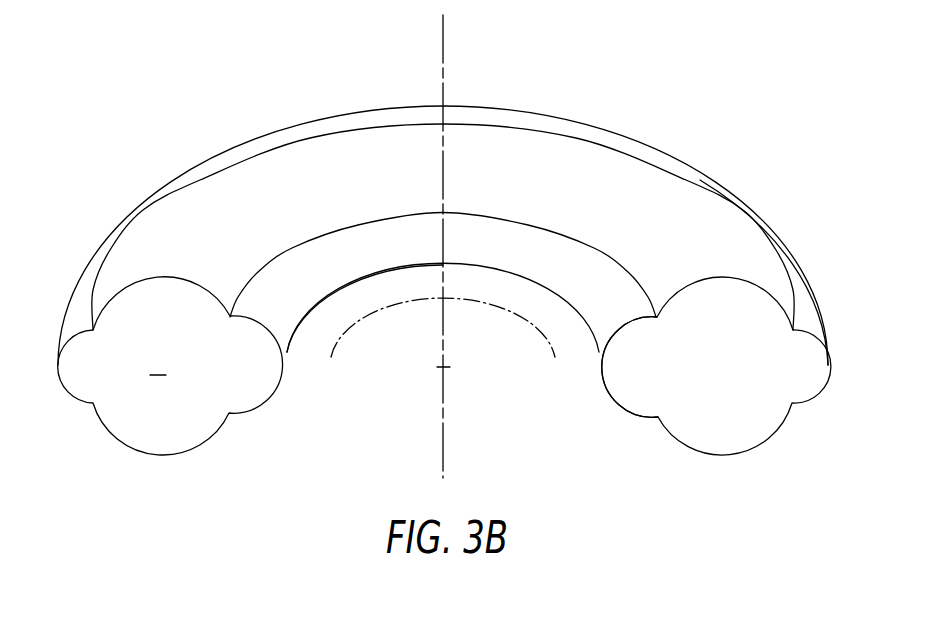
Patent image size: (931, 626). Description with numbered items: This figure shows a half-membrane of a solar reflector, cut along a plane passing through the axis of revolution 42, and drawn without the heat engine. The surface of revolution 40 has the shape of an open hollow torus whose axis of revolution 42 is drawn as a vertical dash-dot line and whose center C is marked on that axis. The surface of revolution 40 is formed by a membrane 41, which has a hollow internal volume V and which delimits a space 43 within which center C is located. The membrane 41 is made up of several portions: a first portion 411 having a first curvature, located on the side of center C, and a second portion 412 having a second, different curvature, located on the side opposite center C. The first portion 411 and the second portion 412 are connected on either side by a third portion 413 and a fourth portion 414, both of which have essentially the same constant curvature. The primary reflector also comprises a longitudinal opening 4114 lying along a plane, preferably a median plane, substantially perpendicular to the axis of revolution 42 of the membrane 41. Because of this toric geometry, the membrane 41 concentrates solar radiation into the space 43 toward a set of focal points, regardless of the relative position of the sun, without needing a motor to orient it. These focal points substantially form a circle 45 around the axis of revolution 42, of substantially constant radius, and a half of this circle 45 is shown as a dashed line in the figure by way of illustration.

The surface of revolution 40 is at (96, 94).
The membrane 41 is at (247, 141).
The axis of revolution 42 is at (442, 43).
The space 43 is at (415, 347).
The circle 45 is at (333, 354).
The first portion 411 is at (548, 284).
The second portion 412 is at (742, 203).
The third portion 413 is at (552, 166).
The fourth portion 414 is at (711, 456).
The longitudinal opening 4114 is at (605, 364).